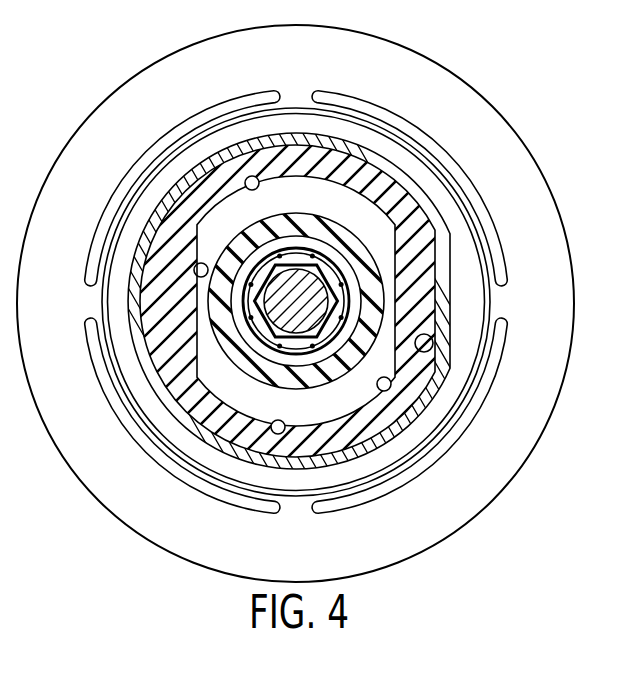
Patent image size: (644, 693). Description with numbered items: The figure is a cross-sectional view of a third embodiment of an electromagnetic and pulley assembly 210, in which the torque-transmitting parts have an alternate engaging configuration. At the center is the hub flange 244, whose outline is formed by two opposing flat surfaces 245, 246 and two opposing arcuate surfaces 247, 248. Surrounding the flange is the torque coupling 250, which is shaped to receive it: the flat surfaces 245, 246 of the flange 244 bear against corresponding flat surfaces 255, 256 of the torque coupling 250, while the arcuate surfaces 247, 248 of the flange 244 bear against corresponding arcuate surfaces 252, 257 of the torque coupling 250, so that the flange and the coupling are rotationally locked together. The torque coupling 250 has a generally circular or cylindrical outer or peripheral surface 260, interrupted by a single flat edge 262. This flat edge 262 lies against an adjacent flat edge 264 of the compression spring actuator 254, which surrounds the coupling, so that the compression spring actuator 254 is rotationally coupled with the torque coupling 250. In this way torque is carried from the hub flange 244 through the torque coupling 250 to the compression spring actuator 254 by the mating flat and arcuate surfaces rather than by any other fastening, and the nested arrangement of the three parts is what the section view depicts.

The electromagnetic and pulley assembly 210 is at (519, 79).
The hub flange 244 is at (330, 190).
The flat surface 245 is at (197, 371).
The flat surface 246 is at (427, 340).
The arcuate surface 247 is at (367, 452).
The arcuate surface 248 is at (284, 158).
The torque coupling 250 is at (422, 243).
The arcuate surface 252 is at (240, 450).
The compression spring actuator 254 is at (442, 320).
The flat surface 255 is at (205, 272).
The flat surface 256 is at (390, 391).
The arcuate surface 257 is at (246, 180).
The outer or peripheral surface 260 is at (393, 173).
The flat edge 262 is at (448, 287).
The flat edge 264 is at (433, 347).